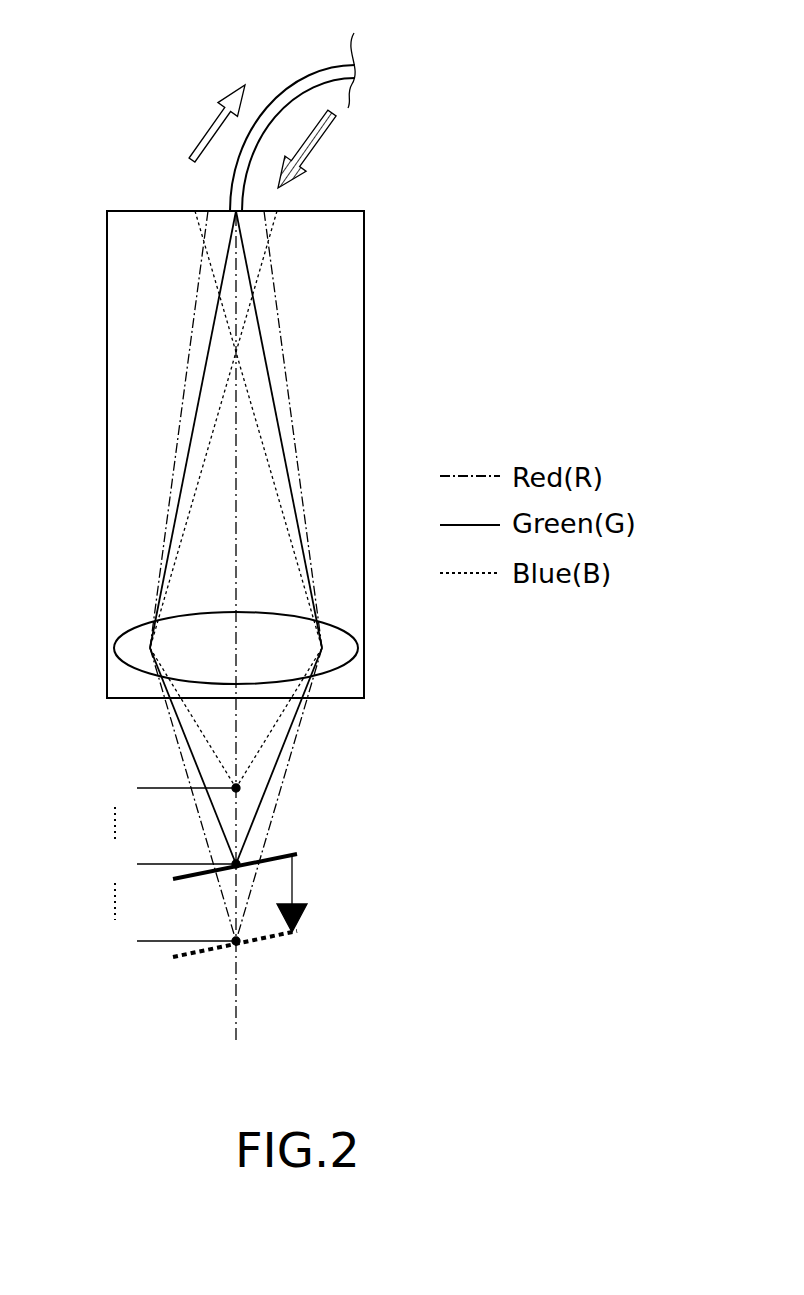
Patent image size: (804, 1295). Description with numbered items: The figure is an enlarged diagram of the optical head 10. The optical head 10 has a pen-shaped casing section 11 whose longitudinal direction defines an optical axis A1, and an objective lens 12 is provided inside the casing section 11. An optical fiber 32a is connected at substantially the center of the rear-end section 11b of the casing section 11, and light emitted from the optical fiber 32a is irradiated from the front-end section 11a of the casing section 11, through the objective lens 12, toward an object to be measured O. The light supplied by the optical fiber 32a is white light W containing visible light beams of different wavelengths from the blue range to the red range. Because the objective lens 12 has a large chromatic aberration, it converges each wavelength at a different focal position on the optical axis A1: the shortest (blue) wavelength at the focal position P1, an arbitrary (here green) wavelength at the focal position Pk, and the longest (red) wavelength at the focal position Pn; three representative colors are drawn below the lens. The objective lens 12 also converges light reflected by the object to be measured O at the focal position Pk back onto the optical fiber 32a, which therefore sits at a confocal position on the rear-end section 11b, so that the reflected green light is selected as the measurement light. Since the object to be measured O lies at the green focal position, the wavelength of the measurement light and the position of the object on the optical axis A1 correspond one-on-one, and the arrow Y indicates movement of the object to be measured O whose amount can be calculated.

The optical head 10 is at (139, 168).
The casing section 11 is at (363, 364).
The front-end section 11a is at (333, 698).
The rear-end section 11b is at (333, 210).
The objective lens 12 is at (358, 642).
The optical fiber 32a is at (282, 88).
The optical axis A1 is at (238, 1015).
The focal position P1 is at (240, 786).
The focal position Pk is at (240, 860).
The focal position Pn is at (240, 945).
The object to be measured O is at (297, 853).
The arrow Y is at (307, 908).
The white light W is at (314, 149).